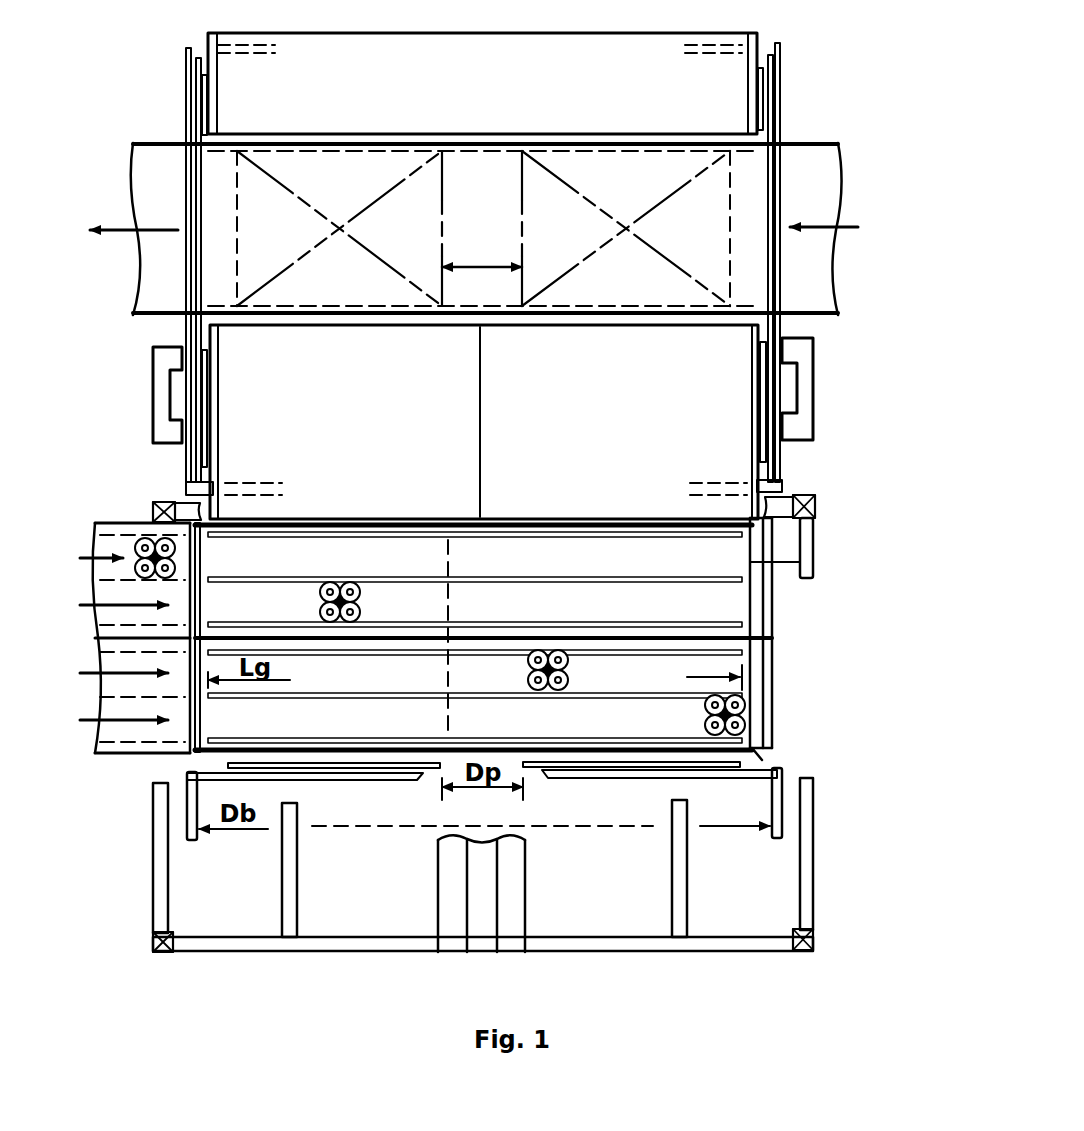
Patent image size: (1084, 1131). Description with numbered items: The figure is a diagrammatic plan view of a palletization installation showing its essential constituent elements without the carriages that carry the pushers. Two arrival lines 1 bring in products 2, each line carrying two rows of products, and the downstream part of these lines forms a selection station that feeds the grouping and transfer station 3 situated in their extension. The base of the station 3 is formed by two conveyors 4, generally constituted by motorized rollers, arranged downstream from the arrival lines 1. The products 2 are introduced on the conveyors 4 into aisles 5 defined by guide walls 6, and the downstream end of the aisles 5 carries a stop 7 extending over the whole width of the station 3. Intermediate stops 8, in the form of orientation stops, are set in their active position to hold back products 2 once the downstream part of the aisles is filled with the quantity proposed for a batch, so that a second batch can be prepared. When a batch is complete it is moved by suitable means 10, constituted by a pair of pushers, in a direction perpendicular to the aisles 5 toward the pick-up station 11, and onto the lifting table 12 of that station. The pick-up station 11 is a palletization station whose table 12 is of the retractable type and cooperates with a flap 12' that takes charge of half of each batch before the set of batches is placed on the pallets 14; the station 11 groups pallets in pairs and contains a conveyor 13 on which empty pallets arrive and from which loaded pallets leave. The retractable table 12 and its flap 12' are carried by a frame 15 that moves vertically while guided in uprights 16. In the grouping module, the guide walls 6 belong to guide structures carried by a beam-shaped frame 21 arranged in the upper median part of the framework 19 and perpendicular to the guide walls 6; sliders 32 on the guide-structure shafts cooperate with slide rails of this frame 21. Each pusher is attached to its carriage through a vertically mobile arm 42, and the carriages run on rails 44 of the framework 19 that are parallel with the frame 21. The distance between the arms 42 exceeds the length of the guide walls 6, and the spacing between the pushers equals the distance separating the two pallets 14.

The arrival line 1 is at (134, 520).
The product 2 is at (197, 558).
The grouping and transfer station 3 is at (863, 502).
The conveyor 4 is at (776, 616).
The aisle 5 is at (475, 637).
The guide wall 6 is at (672, 538).
The stop 7 is at (752, 710).
The intermediate stop 8 is at (447, 597).
The means of moving the batches 10 is at (380, 783).
The pick-up station 11 is at (861, 30).
The lifting table 12 is at (484, 422).
The flap 12' is at (482, 83).
The conveyor 13 is at (160, 142).
The pallet 14 is at (522, 200).
The frame 15 is at (185, 68).
The upright 16 is at (153, 397).
The framework 19 is at (818, 545).
The frame 21 is at (531, 908).
The slider 32 is at (450, 878).
The arm 42 is at (190, 842).
The rail 44 is at (170, 903).